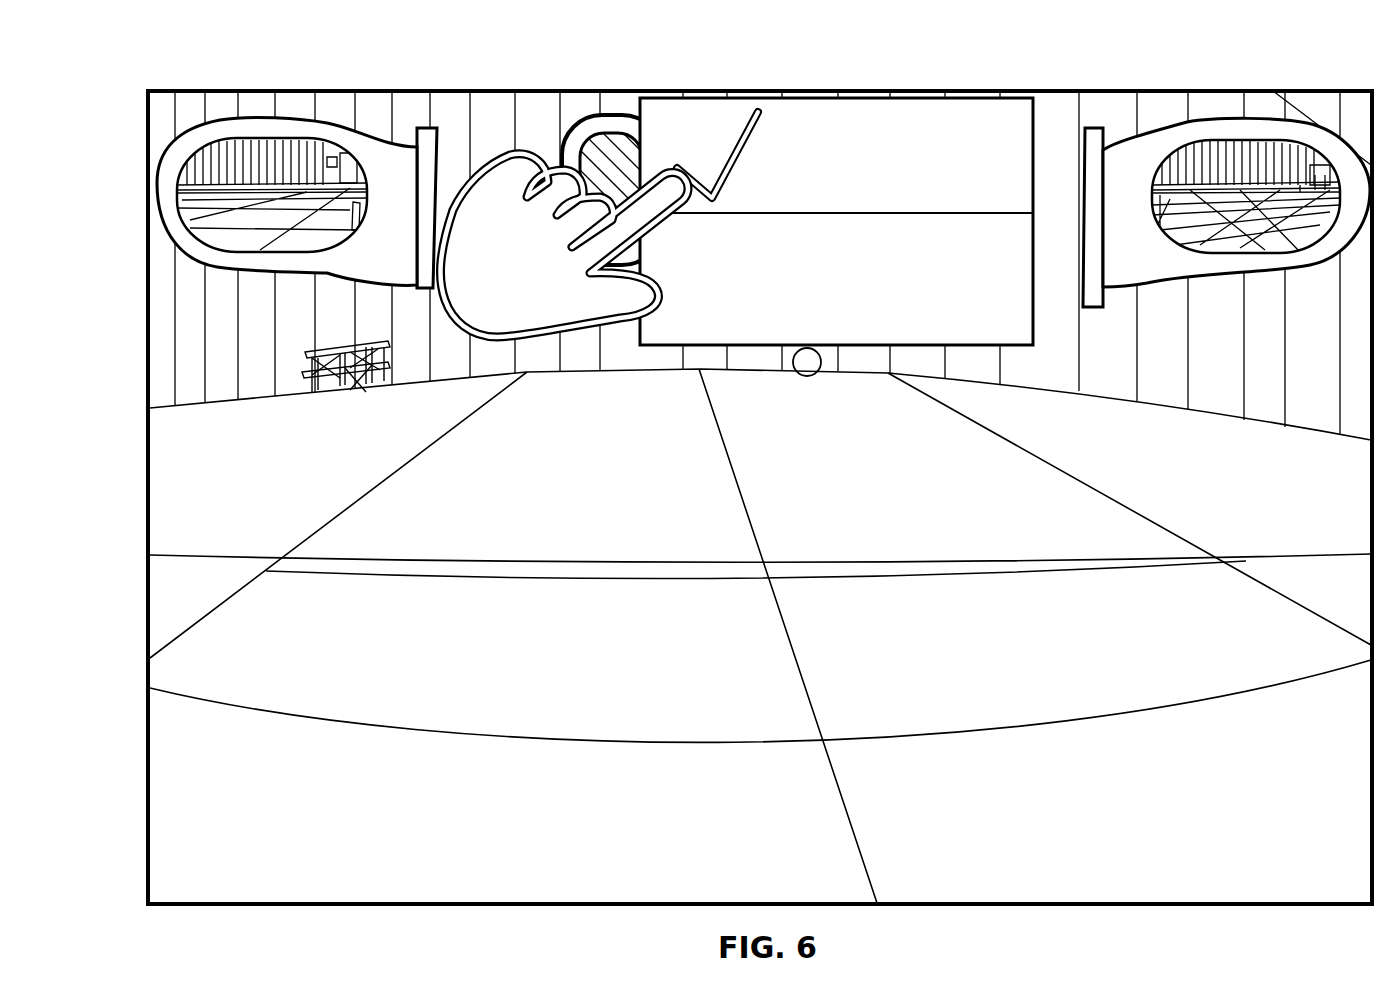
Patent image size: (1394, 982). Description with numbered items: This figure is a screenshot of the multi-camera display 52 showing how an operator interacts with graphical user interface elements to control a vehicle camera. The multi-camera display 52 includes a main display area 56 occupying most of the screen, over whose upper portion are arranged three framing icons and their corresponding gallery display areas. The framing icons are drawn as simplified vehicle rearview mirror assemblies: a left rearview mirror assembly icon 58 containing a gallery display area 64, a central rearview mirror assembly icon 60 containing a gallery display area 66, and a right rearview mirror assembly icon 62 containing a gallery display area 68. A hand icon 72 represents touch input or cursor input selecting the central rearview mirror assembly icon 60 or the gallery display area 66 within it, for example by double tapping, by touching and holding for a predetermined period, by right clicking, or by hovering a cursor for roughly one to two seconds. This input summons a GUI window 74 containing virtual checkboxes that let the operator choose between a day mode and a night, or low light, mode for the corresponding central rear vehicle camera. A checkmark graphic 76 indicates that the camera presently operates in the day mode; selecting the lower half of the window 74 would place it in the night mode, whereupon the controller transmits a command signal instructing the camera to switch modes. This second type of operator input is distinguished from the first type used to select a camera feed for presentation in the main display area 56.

The multi-camera display 52 is at (540, 115).
The main display area 56 is at (1358, 892).
The left rearview mirror assembly icon 58 is at (297, 165).
The central rearview mirror assembly icon 60 is at (605, 156).
The right rearview mirror assembly icon 62 is at (1226, 174).
The gallery display area 64 is at (242, 140).
The gallery display area 66 is at (616, 142).
The gallery display area 68 is at (1267, 140).
The hand icon 72 is at (524, 300).
The GUI window 74 is at (836, 209).
The checkmark graphic 76 is at (747, 130).